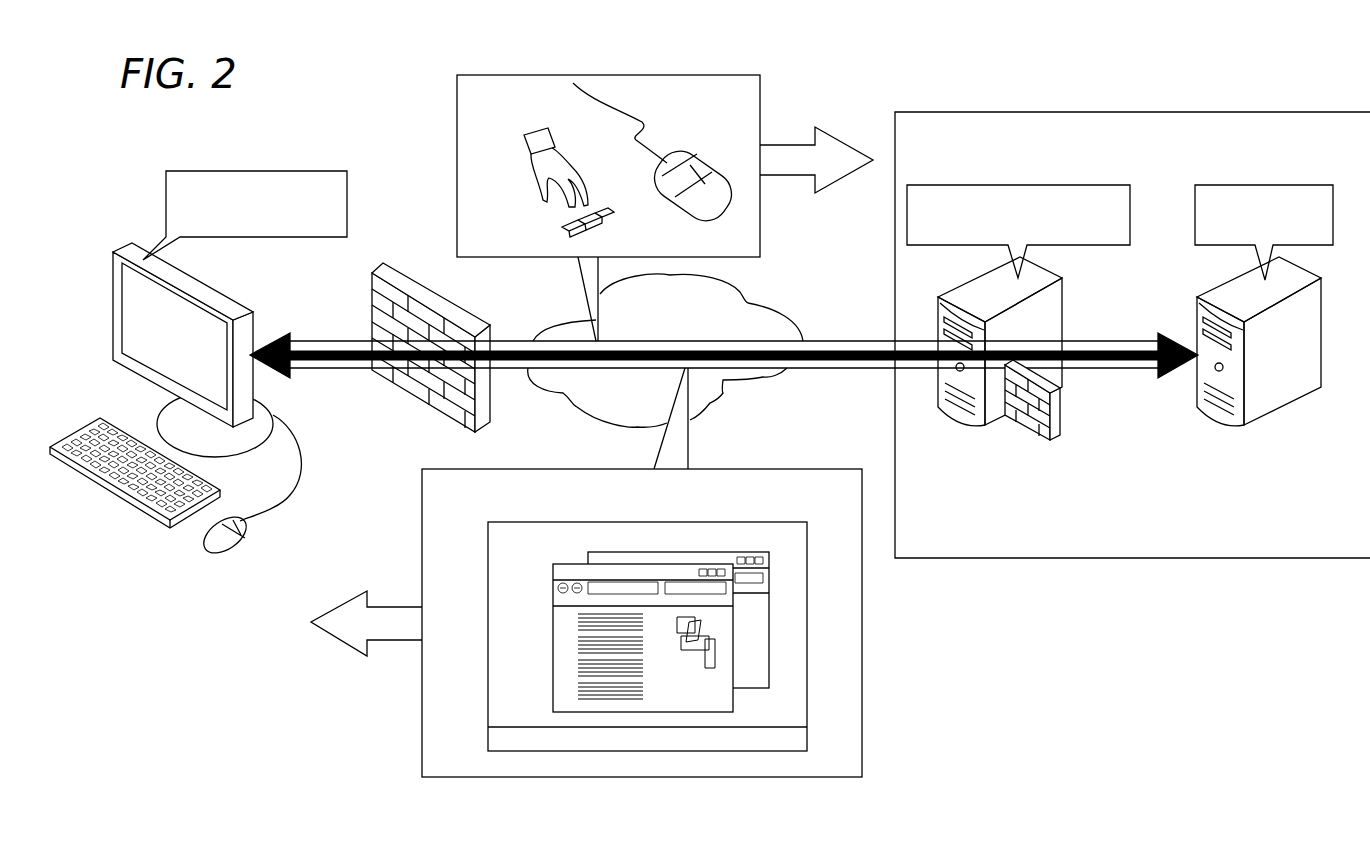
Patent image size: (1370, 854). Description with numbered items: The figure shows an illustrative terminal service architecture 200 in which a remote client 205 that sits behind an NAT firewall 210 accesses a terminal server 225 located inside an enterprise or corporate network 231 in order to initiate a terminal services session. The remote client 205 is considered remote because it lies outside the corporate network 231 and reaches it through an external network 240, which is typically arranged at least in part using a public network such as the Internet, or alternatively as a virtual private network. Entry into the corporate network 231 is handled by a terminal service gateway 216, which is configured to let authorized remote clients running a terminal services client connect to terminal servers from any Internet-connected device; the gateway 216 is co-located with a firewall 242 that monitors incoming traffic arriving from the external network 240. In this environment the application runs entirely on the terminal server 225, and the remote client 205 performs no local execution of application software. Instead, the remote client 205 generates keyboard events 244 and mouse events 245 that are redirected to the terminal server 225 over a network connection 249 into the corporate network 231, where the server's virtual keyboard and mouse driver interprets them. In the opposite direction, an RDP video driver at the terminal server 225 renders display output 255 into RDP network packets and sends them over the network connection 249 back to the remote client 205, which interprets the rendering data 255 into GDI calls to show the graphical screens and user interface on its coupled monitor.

The terminal service architecture 200 is at (693, 30).
The remote client 205 is at (157, 400).
The NAT firewall 210 is at (372, 280).
The terminal service gateway 216 is at (987, 427).
The terminal server 225 is at (1245, 427).
The corporate network 231 is at (1005, 112).
The external network 240 is at (737, 290).
The firewall 242 is at (1052, 443).
The keyboard events 244 is at (522, 218).
The mouse events 245 is at (728, 135).
The network connection 249 is at (317, 368).
The display output 255 is at (862, 610).